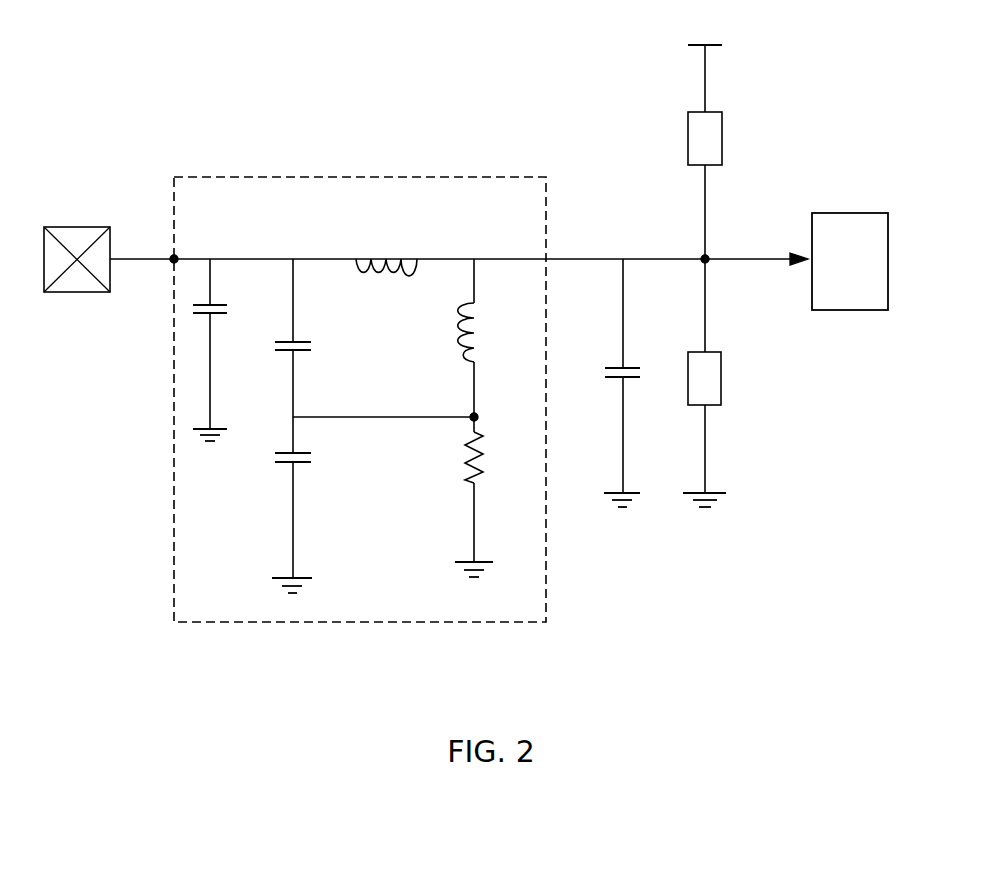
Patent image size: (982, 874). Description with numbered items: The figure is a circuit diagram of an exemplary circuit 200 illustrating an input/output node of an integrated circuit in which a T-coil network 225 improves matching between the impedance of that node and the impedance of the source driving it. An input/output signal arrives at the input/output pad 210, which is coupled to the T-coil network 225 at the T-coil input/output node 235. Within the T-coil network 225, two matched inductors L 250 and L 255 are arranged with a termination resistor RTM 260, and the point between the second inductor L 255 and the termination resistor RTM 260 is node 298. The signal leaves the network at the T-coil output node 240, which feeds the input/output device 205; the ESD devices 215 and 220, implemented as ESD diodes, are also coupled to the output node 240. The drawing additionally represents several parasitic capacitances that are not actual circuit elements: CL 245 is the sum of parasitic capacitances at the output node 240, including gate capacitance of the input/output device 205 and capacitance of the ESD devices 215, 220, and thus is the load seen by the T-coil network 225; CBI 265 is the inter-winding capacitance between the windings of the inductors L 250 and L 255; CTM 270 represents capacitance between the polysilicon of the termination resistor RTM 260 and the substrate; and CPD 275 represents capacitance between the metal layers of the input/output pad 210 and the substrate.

The circuit 200 is at (450, 137).
The input/output device 205 is at (839, 261).
The input/output pad 210 is at (77, 227).
The ESD device 215 is at (723, 152).
The ESD device 220 is at (721, 383).
The T-coil network 225 is at (327, 177).
The T-coil input/output node 235 is at (172, 257).
The T-coil output node 240 is at (704, 257).
The load capacitance CL 245 is at (605, 383).
The inductor L 250 is at (386, 237).
The inductor L 255 is at (494, 338).
The termination resistor RTM 260 is at (486, 497).
The inter-winding capacitance CBI 265 is at (310, 338).
The capacitance CTM 270 is at (308, 505).
The capacitance CPD 275 is at (228, 350).
The node 298 is at (476, 415).